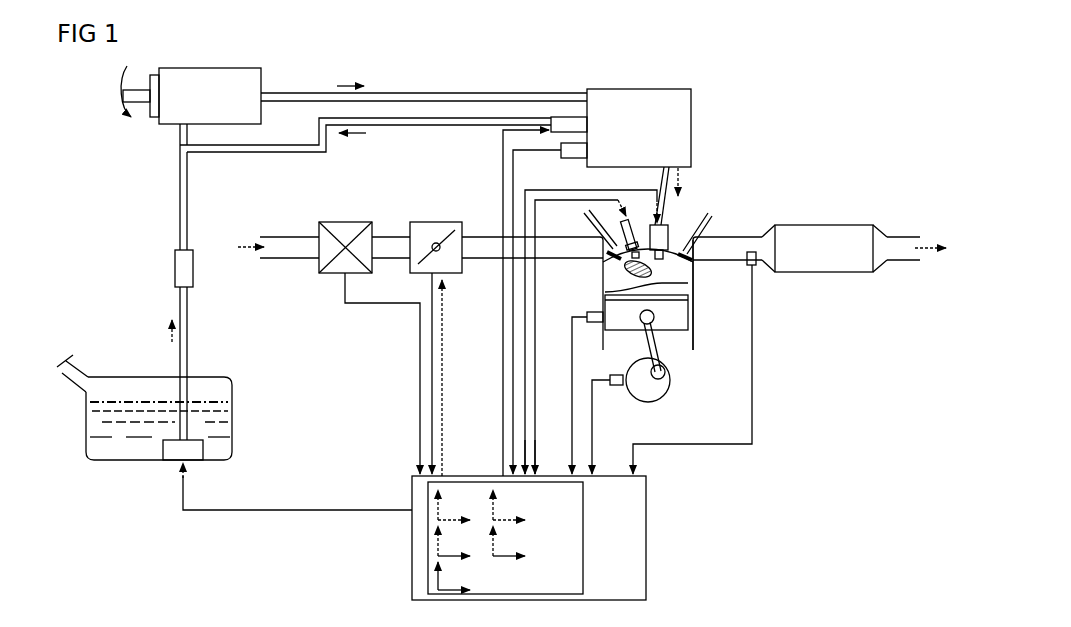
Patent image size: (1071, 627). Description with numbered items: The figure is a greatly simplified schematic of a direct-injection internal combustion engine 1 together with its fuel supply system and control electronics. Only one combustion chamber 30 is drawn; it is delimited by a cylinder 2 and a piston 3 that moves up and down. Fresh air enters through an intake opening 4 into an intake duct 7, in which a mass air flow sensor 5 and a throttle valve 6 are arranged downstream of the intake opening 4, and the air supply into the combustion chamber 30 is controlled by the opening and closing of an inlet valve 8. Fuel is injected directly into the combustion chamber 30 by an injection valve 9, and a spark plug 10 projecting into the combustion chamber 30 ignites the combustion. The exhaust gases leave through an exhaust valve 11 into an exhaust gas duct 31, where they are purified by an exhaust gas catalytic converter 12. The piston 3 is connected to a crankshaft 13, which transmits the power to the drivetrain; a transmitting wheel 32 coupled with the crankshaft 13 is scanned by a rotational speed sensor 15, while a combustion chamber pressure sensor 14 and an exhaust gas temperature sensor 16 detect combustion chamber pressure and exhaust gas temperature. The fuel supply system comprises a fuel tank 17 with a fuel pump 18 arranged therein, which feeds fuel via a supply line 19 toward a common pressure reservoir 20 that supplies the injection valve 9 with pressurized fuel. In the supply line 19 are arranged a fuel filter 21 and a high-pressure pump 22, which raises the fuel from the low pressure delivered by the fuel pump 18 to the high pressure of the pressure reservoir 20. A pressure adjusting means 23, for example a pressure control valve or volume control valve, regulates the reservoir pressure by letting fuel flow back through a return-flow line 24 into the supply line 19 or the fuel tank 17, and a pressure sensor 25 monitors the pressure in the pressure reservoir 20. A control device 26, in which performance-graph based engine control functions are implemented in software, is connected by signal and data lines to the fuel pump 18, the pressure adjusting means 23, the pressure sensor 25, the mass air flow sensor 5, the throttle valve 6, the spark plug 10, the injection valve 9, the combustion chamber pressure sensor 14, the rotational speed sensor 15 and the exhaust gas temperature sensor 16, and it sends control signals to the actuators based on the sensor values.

The internal combustion engine 1 is at (756, 160).
The cylinder 2 is at (694, 340).
The piston 3 is at (620, 331).
The intake opening 4 is at (258, 254).
The mass air flow sensor 5 is at (345, 222).
The throttle valve 6 is at (435, 222).
The intake duct 7 is at (480, 237).
The inlet valves 8 is at (590, 222).
The injection valve 9 is at (670, 238).
The spark plug 10 is at (627, 228).
The exhaust valves 11 is at (712, 218).
The exhaust gas catalytic converter 12 is at (820, 225).
The crankshaft 13 is at (666, 373).
The combustion chamber pressure sensor 14 is at (597, 323).
The rotational speed sensor 15 is at (616, 386).
The exhaust gas temperature sensor 16 is at (755, 267).
The fuel tank 17 is at (122, 377).
The fuel pump 18 is at (178, 462).
The supply line 19 is at (423, 93).
The pressure reservoir 20 is at (636, 89).
The fuel filter 21 is at (175, 269).
The high-pressure pump 22 is at (201, 68).
The pressure adjusting means 23 is at (588, 125).
The return-flow line 24 is at (400, 126).
The pressure sensor 25 is at (588, 149).
The control device 26 is at (646, 541).
The combustion chamber 30 is at (603, 281).
The exhaust gas duct 31 is at (894, 213).
The transmitting wheel 32 is at (670, 393).